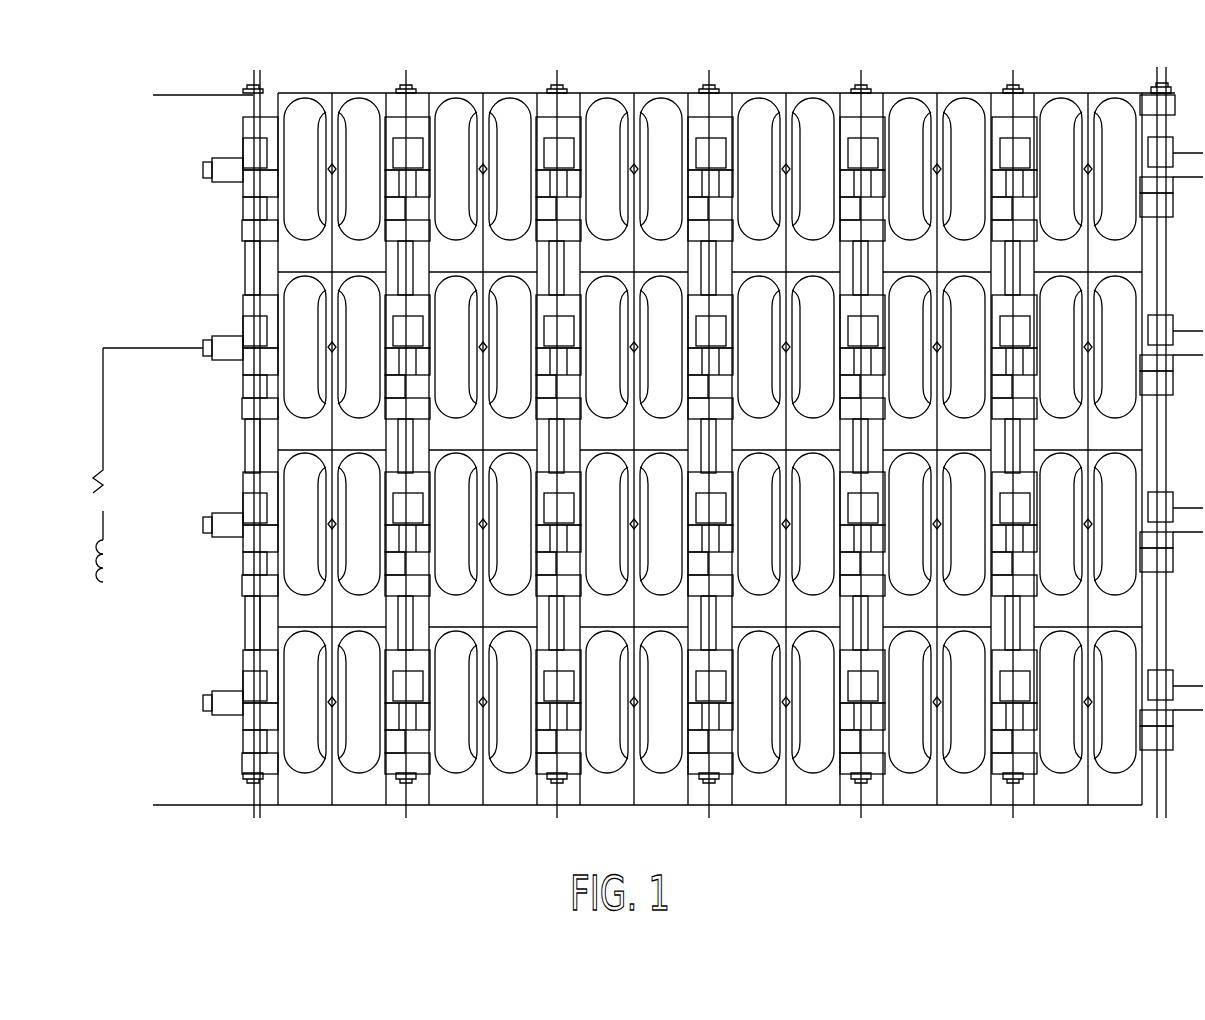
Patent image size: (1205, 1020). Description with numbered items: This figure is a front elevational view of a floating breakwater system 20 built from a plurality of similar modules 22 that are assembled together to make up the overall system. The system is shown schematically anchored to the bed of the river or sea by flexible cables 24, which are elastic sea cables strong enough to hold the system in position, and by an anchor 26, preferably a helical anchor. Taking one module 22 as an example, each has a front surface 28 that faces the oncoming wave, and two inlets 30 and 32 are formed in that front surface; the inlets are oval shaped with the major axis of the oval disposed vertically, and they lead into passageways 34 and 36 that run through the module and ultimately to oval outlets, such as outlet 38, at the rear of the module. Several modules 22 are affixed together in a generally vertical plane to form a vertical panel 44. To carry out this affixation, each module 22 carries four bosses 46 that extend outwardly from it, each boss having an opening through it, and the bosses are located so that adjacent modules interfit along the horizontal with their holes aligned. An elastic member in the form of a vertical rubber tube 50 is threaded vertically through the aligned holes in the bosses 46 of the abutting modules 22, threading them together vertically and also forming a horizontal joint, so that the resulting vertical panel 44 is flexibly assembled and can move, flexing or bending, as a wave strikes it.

The floating breakwater system 20 is at (180, 273).
The module 22 is at (290, 470).
The flexible cable 24 is at (103, 400).
The anchor 26 is at (95, 560).
The front surface 28 is at (295, 268).
The inlet 30 is at (290, 112).
The inlet 32 is at (366, 120).
The passageway 34 is at (305, 127).
The passageway 36 is at (358, 197).
The outlet 38 is at (310, 142).
The vertical panel 44 is at (580, 93).
The boss 46 is at (550, 125).
The vertical rubber tube 50 is at (252, 622).